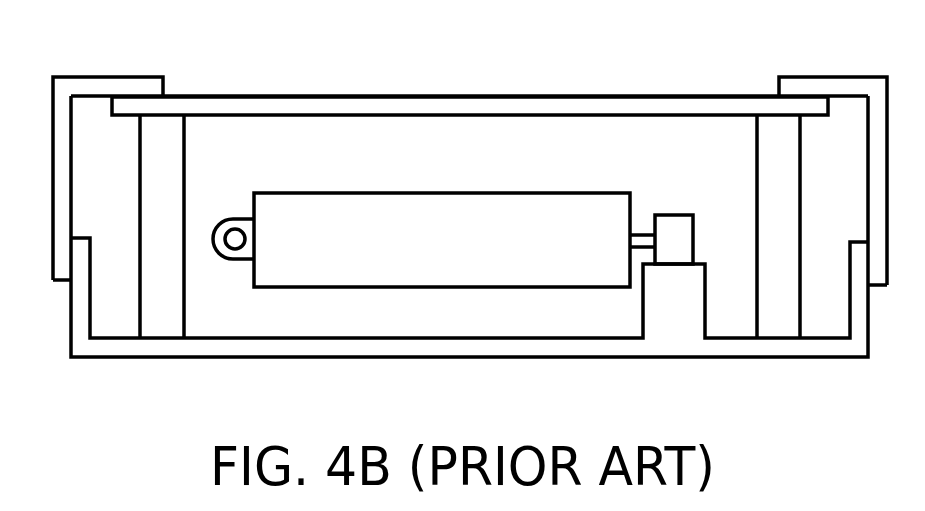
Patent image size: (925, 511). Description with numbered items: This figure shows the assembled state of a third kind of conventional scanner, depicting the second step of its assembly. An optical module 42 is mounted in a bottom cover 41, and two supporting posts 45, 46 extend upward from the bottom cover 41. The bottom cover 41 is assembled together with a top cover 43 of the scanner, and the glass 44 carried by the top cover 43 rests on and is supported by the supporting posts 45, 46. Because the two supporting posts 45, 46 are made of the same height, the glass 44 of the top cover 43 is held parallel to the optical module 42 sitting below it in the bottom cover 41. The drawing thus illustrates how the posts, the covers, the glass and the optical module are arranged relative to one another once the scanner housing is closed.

The bottom cover 41 is at (737, 360).
The optical module 42 is at (474, 210).
The top cover 43 is at (108, 65).
The glass 44 is at (546, 110).
The supporting post 45 is at (164, 142).
The supporting post 46 is at (776, 148).